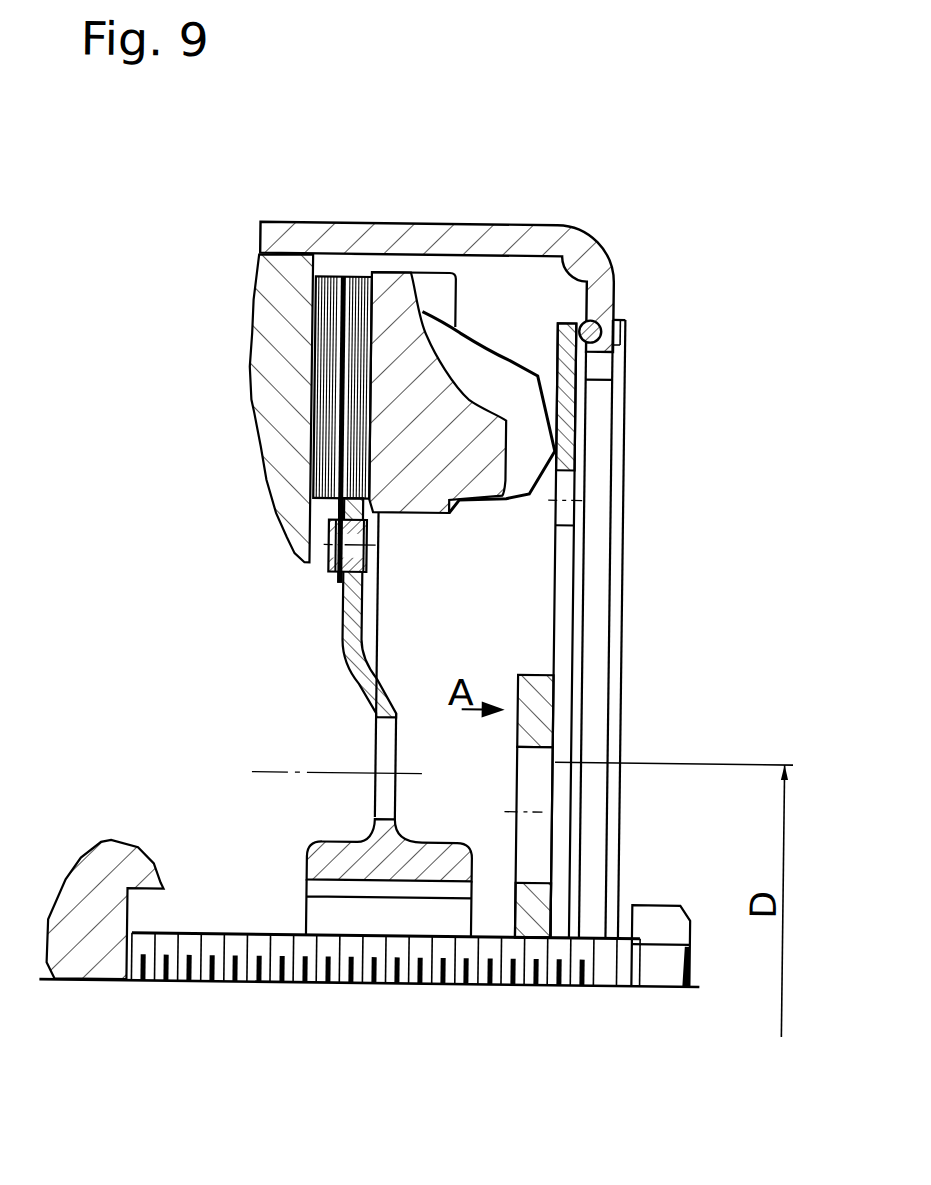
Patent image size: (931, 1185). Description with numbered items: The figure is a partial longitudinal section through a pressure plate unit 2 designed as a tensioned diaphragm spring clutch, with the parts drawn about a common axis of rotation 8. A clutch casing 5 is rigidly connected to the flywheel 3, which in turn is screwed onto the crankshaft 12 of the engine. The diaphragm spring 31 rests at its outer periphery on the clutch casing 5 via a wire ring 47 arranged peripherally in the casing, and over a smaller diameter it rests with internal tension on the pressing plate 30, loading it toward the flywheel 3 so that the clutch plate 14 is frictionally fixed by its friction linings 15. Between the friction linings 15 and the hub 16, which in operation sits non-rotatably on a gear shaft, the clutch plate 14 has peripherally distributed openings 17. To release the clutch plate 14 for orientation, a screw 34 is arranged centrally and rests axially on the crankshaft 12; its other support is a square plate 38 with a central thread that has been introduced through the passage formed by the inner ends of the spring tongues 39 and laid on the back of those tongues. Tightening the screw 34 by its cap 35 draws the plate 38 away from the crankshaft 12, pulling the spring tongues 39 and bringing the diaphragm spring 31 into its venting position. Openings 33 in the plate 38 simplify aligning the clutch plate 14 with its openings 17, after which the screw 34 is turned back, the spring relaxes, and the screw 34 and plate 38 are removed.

The pressure plate unit 2 is at (670, 177).
The flywheel 3 is at (264, 314).
The clutch casing 5 is at (536, 236).
The axis of rotation 8 is at (653, 988).
The crankshaft 12 is at (103, 864).
The clutch plate 14 is at (353, 636).
The friction linings 15 is at (346, 286).
The hub 16 is at (355, 851).
The openings 17 is at (388, 730).
The pressing plate 30 is at (401, 290).
The diaphragm spring 31 is at (565, 439).
The openings 33 is at (540, 844).
The screw 34 is at (290, 977).
The cap 35 is at (654, 913).
The plate 38 is at (546, 705).
The spring tongues 39 is at (566, 627).
The wire ring 47 is at (597, 318).